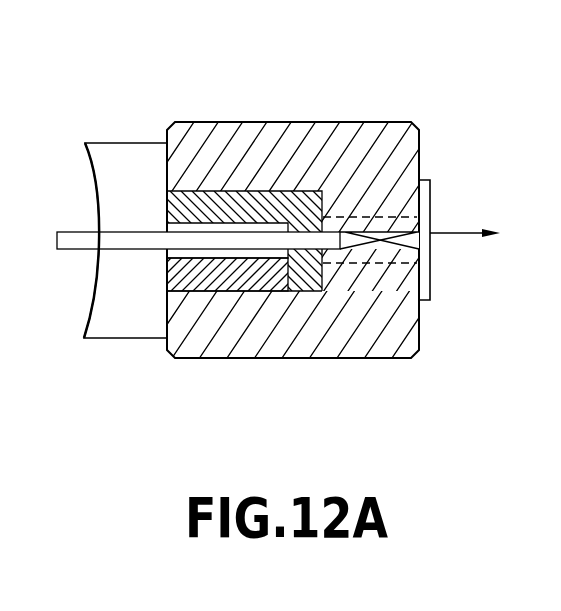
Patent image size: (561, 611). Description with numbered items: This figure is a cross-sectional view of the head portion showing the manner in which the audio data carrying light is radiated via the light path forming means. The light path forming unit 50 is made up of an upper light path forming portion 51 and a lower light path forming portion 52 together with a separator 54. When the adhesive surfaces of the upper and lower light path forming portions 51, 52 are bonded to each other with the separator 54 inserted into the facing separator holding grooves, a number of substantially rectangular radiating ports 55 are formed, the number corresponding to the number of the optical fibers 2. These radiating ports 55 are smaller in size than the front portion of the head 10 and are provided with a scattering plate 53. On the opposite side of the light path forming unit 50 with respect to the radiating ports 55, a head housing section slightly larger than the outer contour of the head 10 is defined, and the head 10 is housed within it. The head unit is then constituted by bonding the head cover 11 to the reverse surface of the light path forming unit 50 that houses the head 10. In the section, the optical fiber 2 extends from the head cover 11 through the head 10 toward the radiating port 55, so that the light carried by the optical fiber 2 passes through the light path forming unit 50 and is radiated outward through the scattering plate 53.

The optical fiber 2 is at (137, 242).
The head 10 is at (233, 288).
The head cover 11 is at (107, 152).
The light path forming unit 50 is at (200, 100).
The upper light path forming portion 51 is at (258, 135).
The lower light path forming portion 52 is at (335, 340).
The scattering plate 53 is at (421, 180).
The separator 54 is at (367, 217).
The radiating port 55 is at (436, 246).